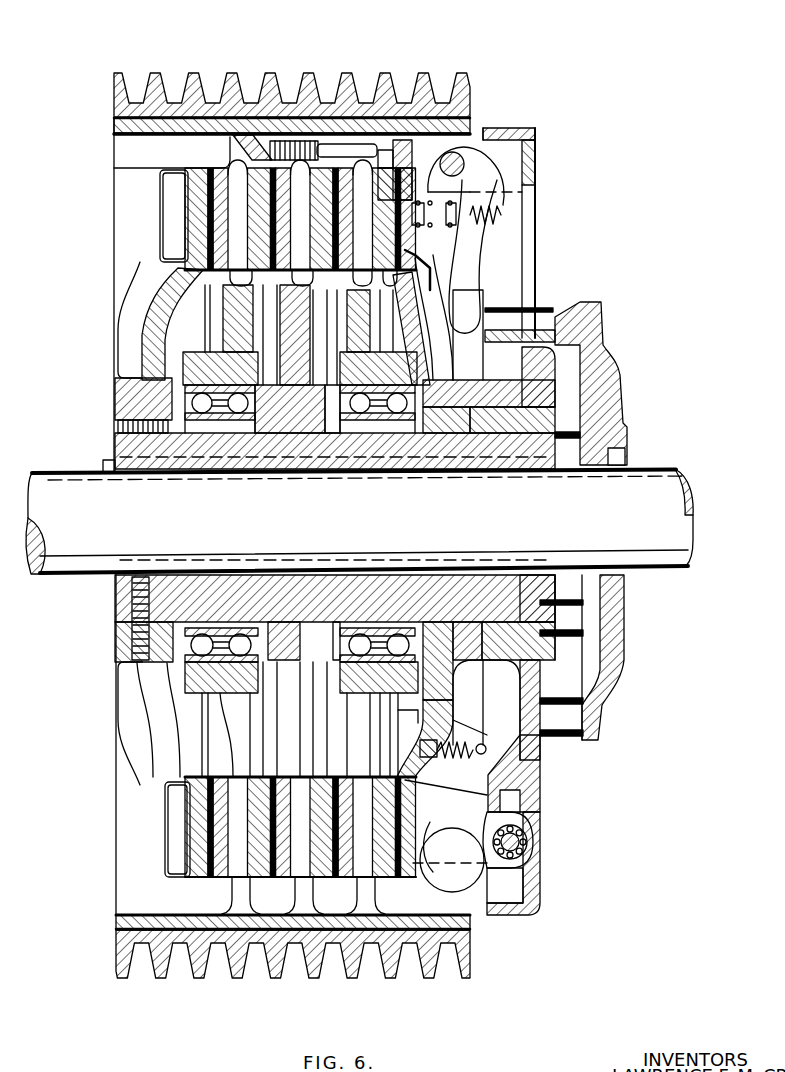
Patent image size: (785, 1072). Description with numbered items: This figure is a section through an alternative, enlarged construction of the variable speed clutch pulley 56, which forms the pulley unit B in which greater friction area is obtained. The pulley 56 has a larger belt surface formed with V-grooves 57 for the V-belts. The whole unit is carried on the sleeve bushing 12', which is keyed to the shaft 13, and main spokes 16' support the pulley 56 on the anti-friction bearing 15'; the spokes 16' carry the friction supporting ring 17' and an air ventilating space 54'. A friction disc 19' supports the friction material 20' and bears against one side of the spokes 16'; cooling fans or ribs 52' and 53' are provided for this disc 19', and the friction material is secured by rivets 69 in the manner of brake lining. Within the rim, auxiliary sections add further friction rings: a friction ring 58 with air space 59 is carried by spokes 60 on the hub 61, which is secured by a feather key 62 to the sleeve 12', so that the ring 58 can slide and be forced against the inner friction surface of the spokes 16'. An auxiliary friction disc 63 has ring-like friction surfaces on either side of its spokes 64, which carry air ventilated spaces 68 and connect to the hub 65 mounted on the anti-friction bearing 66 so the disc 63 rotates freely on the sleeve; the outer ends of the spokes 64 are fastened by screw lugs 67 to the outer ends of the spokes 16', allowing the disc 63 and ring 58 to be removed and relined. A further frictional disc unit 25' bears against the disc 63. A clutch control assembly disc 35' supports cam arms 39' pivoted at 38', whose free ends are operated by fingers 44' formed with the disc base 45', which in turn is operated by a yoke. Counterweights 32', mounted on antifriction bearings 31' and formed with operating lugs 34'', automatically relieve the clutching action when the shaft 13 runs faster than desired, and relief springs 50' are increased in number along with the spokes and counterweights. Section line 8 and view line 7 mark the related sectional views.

The shaft 13 is at (75, 570).
The V-grooves 57 is at (220, 82).
The variable speed clutch pulley 56 is at (150, 72).
The friction ring 58 is at (300, 185).
The pulley unit B is at (273, 165).
The air space 59 is at (303, 188).
The screw lugs 67 is at (358, 155).
The air ventilating space 54' is at (253, 109).
The auxiliary friction disc 63 is at (378, 165).
The frictional disc unit 25' is at (395, 175).
The friction disc 19' is at (246, 518).
The cooling fans or ribs 52' is at (132, 506).
The friction material 20' is at (143, 530).
The friction supporting ring 17' is at (148, 240).
The cooling fans or ribs 53' is at (139, 317).
The main spokes 16' is at (296, 335).
The spokes 60 is at (300, 324).
The sleeve bushing 12' is at (305, 520).
The anti-friction bearing 15' is at (221, 539).
The anti-friction bearing 66 is at (400, 412).
The feather key 62 is at (300, 428).
The hub 61 is at (332, 408).
The spokes 64 is at (360, 323).
The hub 65 is at (430, 367).
The air ventilated spaces 68 is at (420, 262).
The pivot 38' is at (475, 174).
The cam arms 39' is at (496, 256).
The clutch control assembly disc 35' is at (544, 526).
The fingers 44' is at (573, 521).
The disc base 45' is at (632, 657).
The relief springs 50' is at (459, 708).
The operating lugs 34'' is at (470, 779).
The antifriction bearings 31' is at (538, 840).
The counterweights 32' is at (447, 863).
The rivets 69 is at (233, 880).
The section line 8 is at (395, 166).
The section line 7 is at (580, 95).